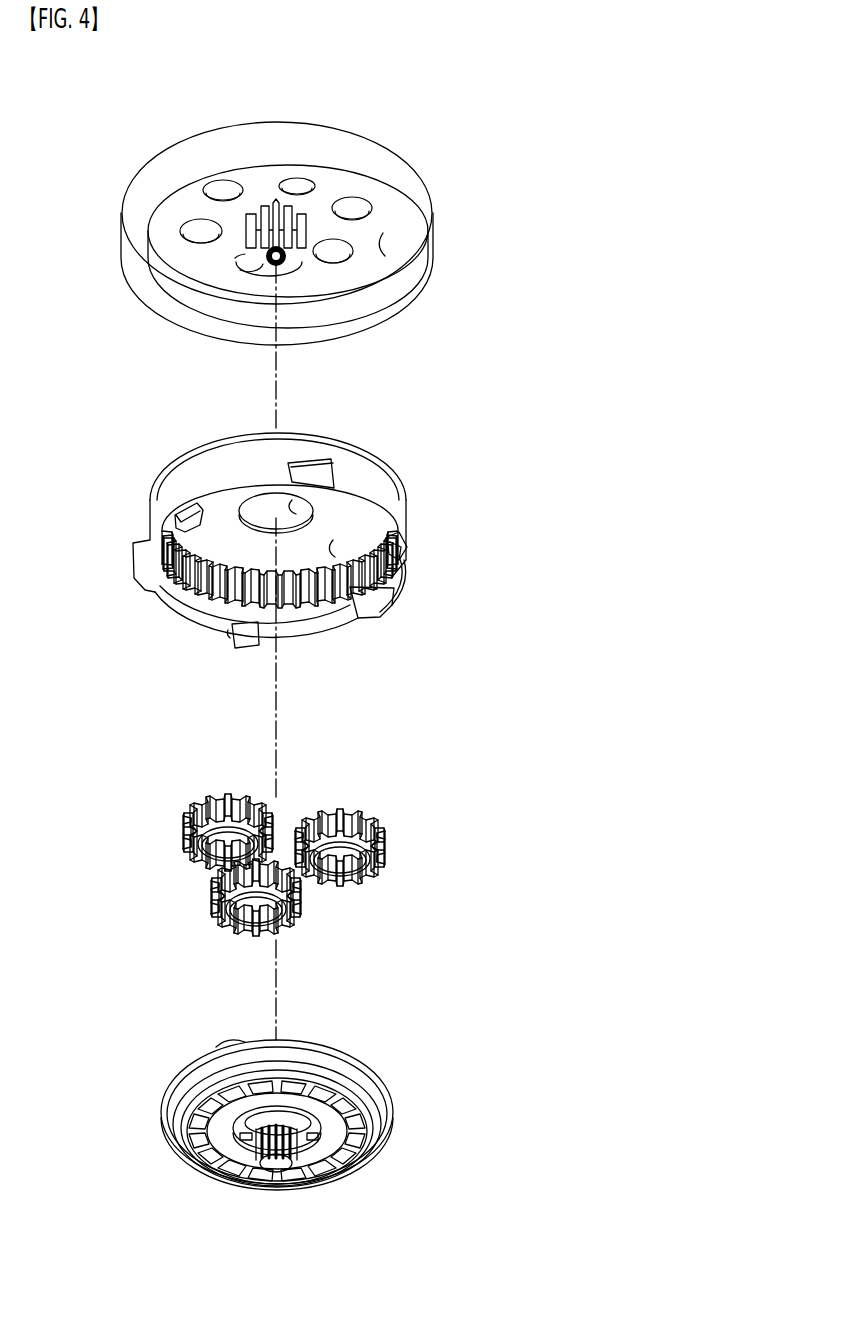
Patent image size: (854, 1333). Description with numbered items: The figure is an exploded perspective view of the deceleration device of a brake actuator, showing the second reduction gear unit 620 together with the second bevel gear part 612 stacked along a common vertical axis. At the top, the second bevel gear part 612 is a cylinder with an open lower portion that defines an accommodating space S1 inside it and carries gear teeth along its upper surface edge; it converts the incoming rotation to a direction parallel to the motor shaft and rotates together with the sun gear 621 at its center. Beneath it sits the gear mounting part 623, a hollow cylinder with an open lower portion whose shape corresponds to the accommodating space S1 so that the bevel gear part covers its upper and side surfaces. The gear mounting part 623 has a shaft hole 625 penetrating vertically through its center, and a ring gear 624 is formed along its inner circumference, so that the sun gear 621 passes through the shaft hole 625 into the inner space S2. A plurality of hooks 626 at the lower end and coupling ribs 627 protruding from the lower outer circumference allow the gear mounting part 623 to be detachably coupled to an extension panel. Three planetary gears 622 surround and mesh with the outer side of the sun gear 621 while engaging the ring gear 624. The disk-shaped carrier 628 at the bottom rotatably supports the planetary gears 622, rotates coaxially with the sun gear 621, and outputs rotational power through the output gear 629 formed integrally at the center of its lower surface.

The second bevel gear part 612 is at (428, 200).
The accommodating space S1 is at (386, 241).
The sun gear 621 is at (284, 260).
The gear mounting part 623 is at (374, 470).
The ring gear 624 is at (328, 588).
The shaft hole 625 is at (298, 506).
The inner space S2 is at (345, 553).
The hooks 626 is at (248, 646).
The coupling ribs 627 is at (368, 612).
The second reduction gear unit 620 is at (421, 816).
The planetary gears 622 is at (308, 893).
The carrier 628 is at (357, 1065).
The output gear 629 is at (312, 1142).